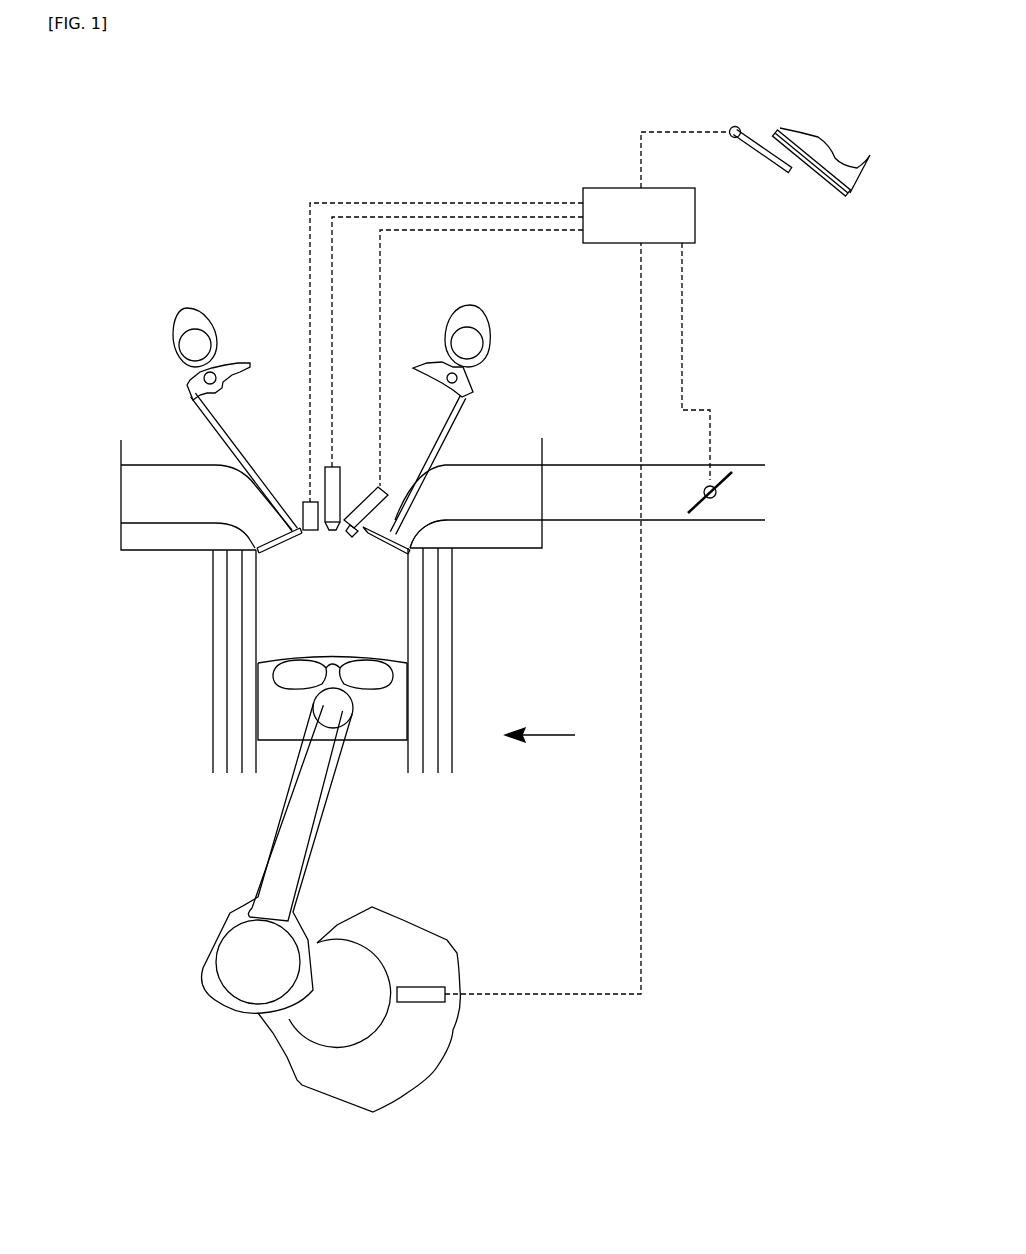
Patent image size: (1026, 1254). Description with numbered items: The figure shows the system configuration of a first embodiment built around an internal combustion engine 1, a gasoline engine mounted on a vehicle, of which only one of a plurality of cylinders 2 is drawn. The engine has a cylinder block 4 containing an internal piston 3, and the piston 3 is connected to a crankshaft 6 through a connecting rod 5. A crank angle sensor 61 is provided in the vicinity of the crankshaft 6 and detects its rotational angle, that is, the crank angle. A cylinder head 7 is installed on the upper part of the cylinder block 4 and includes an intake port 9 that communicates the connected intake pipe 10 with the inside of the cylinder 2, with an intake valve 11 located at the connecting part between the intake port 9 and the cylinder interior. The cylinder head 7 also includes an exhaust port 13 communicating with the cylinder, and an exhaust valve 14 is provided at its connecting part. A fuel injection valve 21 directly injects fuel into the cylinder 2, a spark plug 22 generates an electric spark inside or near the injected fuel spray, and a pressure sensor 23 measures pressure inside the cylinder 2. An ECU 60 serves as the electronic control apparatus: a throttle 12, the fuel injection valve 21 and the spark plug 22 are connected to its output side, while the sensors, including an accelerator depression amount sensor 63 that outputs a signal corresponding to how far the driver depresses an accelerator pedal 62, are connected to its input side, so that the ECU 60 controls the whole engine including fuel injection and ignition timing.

The internal combustion engine 1 is at (547, 735).
The cylinder 2 is at (282, 640).
The piston 3 is at (265, 684).
The cylinder block 4 is at (454, 677).
The connecting rod 5 is at (334, 822).
The crankshaft 6 is at (375, 950).
The cylinder head 7 is at (506, 553).
The intake port 9 is at (548, 465).
The intake pipe 10 is at (620, 522).
The intake valve 11 is at (393, 557).
The throttle 12 is at (713, 500).
The exhaust port 13 is at (162, 482).
The exhaust valve 14 is at (268, 560).
The fuel injection valve 21 is at (336, 466).
The spark plug 22 is at (353, 494).
The pressure sensor 23 is at (302, 504).
The ECU 60 is at (697, 222).
The crank angle sensor 61 is at (424, 1003).
The accelerator pedal 62 is at (810, 175).
The accelerator depression amount sensor 63 is at (730, 137).